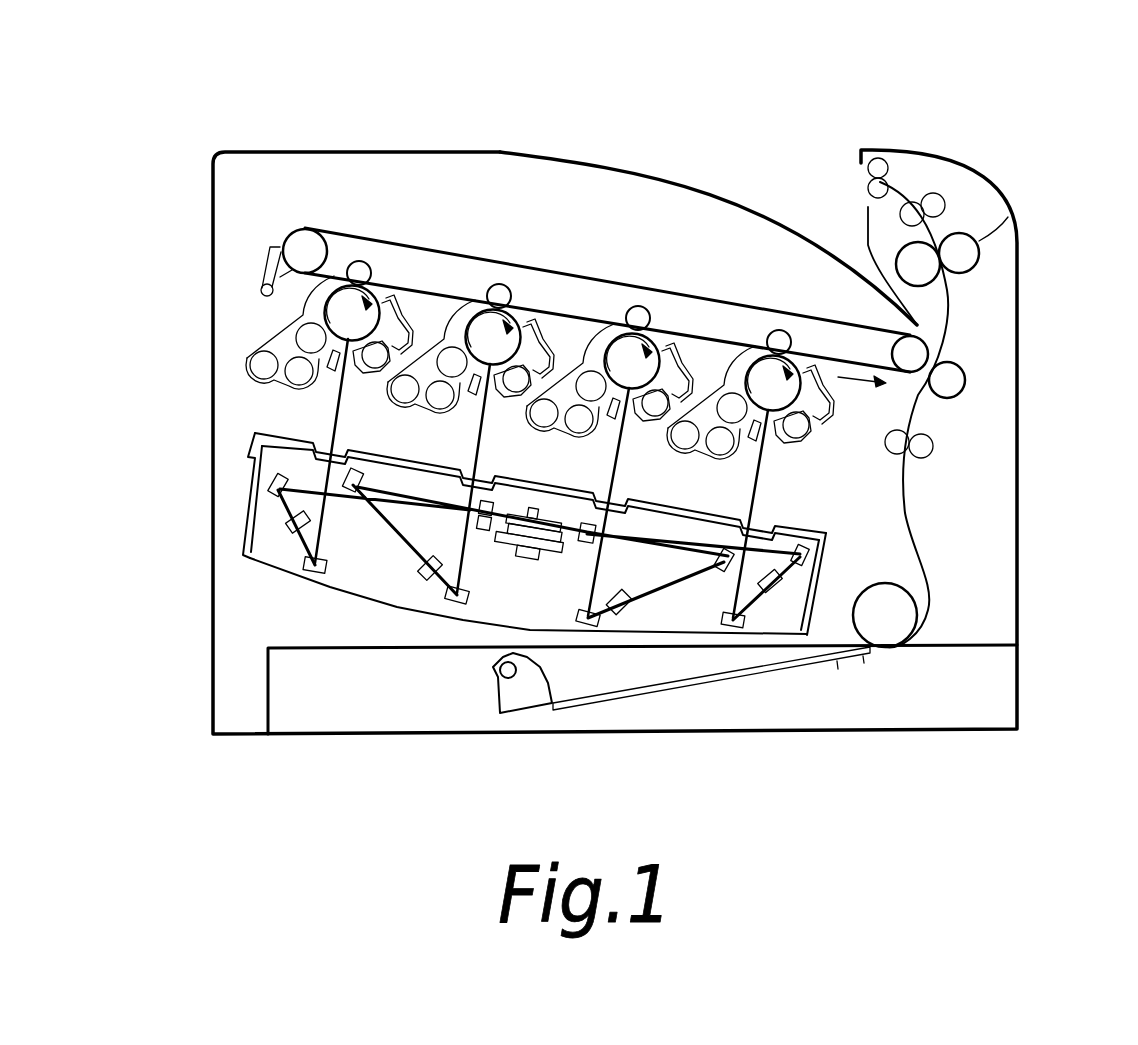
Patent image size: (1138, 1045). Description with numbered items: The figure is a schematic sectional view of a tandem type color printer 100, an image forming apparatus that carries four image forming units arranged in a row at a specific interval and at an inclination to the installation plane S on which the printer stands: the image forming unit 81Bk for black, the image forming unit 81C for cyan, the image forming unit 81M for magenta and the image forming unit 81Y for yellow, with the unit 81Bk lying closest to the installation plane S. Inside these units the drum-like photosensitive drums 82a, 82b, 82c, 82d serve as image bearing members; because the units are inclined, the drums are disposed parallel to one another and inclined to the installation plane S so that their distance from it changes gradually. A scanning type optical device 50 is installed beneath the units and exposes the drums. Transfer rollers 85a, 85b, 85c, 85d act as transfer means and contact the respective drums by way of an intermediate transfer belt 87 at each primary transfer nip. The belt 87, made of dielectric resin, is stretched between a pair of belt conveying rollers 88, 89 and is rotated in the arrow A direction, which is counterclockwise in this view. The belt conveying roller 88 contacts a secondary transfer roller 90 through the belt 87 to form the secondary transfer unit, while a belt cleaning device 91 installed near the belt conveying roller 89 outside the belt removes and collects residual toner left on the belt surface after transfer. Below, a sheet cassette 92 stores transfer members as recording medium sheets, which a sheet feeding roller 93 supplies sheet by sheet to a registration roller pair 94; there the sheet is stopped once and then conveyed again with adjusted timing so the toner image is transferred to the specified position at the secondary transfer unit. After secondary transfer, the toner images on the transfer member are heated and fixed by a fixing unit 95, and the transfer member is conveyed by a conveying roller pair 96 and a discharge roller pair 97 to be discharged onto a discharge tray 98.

The scanning type optical device 50 is at (267, 567).
The image forming unit 81Y is at (278, 332).
The image forming unit 81M is at (447, 322).
The image forming unit 81C is at (583, 350).
The image forming unit 81Bk is at (725, 372).
The photosensitive drum 82a is at (730, 368).
The photosensitive drum 82b is at (590, 352).
The photosensitive drum 82c is at (470, 292).
The photosensitive drum 82d is at (335, 245).
The transfer roller 85a is at (781, 330).
The transfer roller 85b is at (639, 306).
The transfer roller 85c is at (500, 284).
The transfer roller 85d is at (359, 261).
The intermediate transfer belt 87 is at (832, 320).
The belt conveying roller 88 is at (950, 310).
The belt conveying roller 89 is at (302, 228).
The secondary transfer roller 90 is at (967, 377).
The belt cleaning device 91 is at (262, 248).
The sheet cassette 92 is at (423, 693).
The sheet feeding roller 93 is at (923, 577).
The registration roller pair 94 is at (933, 445).
The fixing unit 95 is at (1016, 300).
The conveying roller pair 96 is at (941, 200).
The discharge roller pair 97 is at (887, 150).
The discharge tray 98 is at (800, 232).
The color printer 100 is at (212, 540).
The installation plane S is at (730, 732).
The arrow A direction A is at (862, 396).